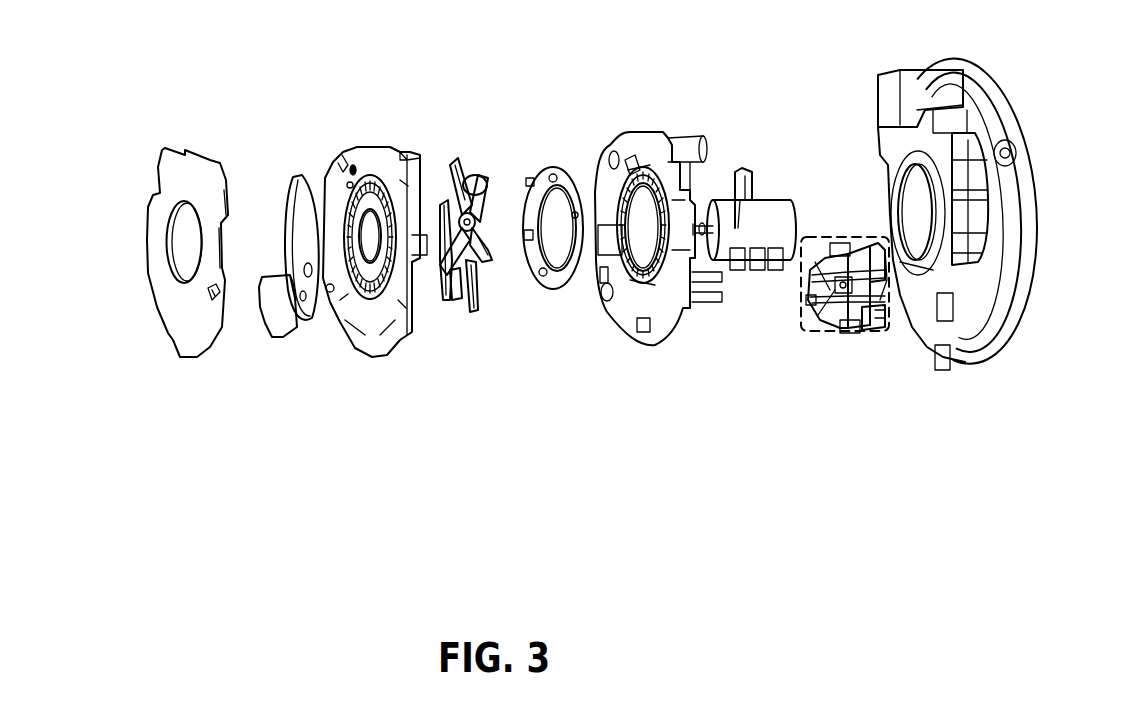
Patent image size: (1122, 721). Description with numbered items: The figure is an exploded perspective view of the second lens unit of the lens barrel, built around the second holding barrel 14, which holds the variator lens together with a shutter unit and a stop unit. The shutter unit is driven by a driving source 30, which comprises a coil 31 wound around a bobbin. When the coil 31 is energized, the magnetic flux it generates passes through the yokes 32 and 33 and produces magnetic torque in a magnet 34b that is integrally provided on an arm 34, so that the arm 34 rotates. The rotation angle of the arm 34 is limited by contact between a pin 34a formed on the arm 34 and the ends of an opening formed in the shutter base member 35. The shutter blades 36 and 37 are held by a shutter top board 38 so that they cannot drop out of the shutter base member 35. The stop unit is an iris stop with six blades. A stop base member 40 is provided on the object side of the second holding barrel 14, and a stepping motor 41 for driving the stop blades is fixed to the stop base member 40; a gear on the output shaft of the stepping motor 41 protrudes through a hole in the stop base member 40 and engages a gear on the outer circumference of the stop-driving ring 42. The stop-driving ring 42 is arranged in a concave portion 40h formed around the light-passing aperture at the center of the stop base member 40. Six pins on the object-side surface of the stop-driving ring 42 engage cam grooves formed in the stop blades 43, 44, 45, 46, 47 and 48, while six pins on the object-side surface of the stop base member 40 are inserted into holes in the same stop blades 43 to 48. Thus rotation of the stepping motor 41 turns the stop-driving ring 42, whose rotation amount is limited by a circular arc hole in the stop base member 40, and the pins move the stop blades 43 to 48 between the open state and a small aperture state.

The second holding barrel 14 is at (988, 297).
The driving source 30 is at (878, 325).
The coil 31 is at (810, 300).
The yoke 32 is at (847, 323).
The yoke 33 is at (872, 322).
The arm 34 is at (800, 333).
The pin 34a is at (833, 240).
The magnet 34b is at (850, 333).
The shutter base member 35 is at (405, 150).
The shutter blade 36 is at (303, 220).
The shutter blade 37 is at (278, 312).
The shutter top board 38 is at (193, 173).
The stop base member 40 is at (632, 340).
The concave portion 40h is at (624, 292).
The stepping motor 41 is at (770, 215).
The stop-driving ring 42 is at (540, 170).
The stop blade 43 is at (460, 177).
The stop blade 44 is at (483, 175).
The stop blade 45 is at (478, 250).
The stop blade 46 is at (470, 300).
The stop blade 47 is at (451, 298).
The stop blade 48 is at (441, 210).